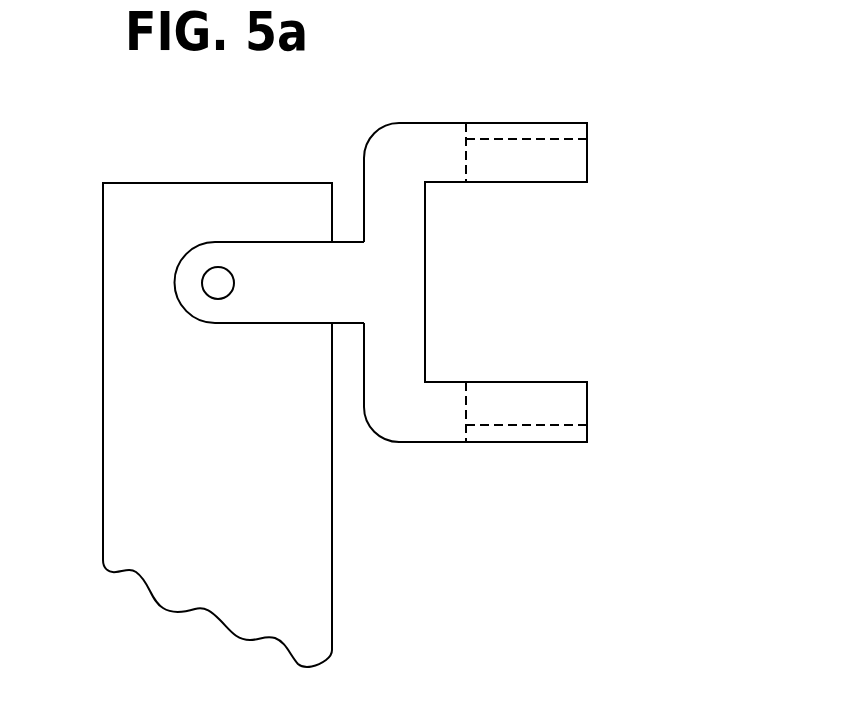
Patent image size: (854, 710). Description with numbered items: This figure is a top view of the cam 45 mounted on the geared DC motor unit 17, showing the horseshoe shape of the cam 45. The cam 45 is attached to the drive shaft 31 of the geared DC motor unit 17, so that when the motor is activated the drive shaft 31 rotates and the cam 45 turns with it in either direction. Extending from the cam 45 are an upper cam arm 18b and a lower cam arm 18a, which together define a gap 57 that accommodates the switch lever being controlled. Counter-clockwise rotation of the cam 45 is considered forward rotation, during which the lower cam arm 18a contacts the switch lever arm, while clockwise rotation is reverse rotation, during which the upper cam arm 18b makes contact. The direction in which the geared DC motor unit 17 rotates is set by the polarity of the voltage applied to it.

The geared DC motor unit 17 is at (130, 423).
The drive shaft 31 is at (203, 283).
The cam 45 is at (397, 153).
The lower cam arm 18a is at (563, 382).
The upper cam arm 18b is at (558, 182).
The gap 57 is at (547, 274).